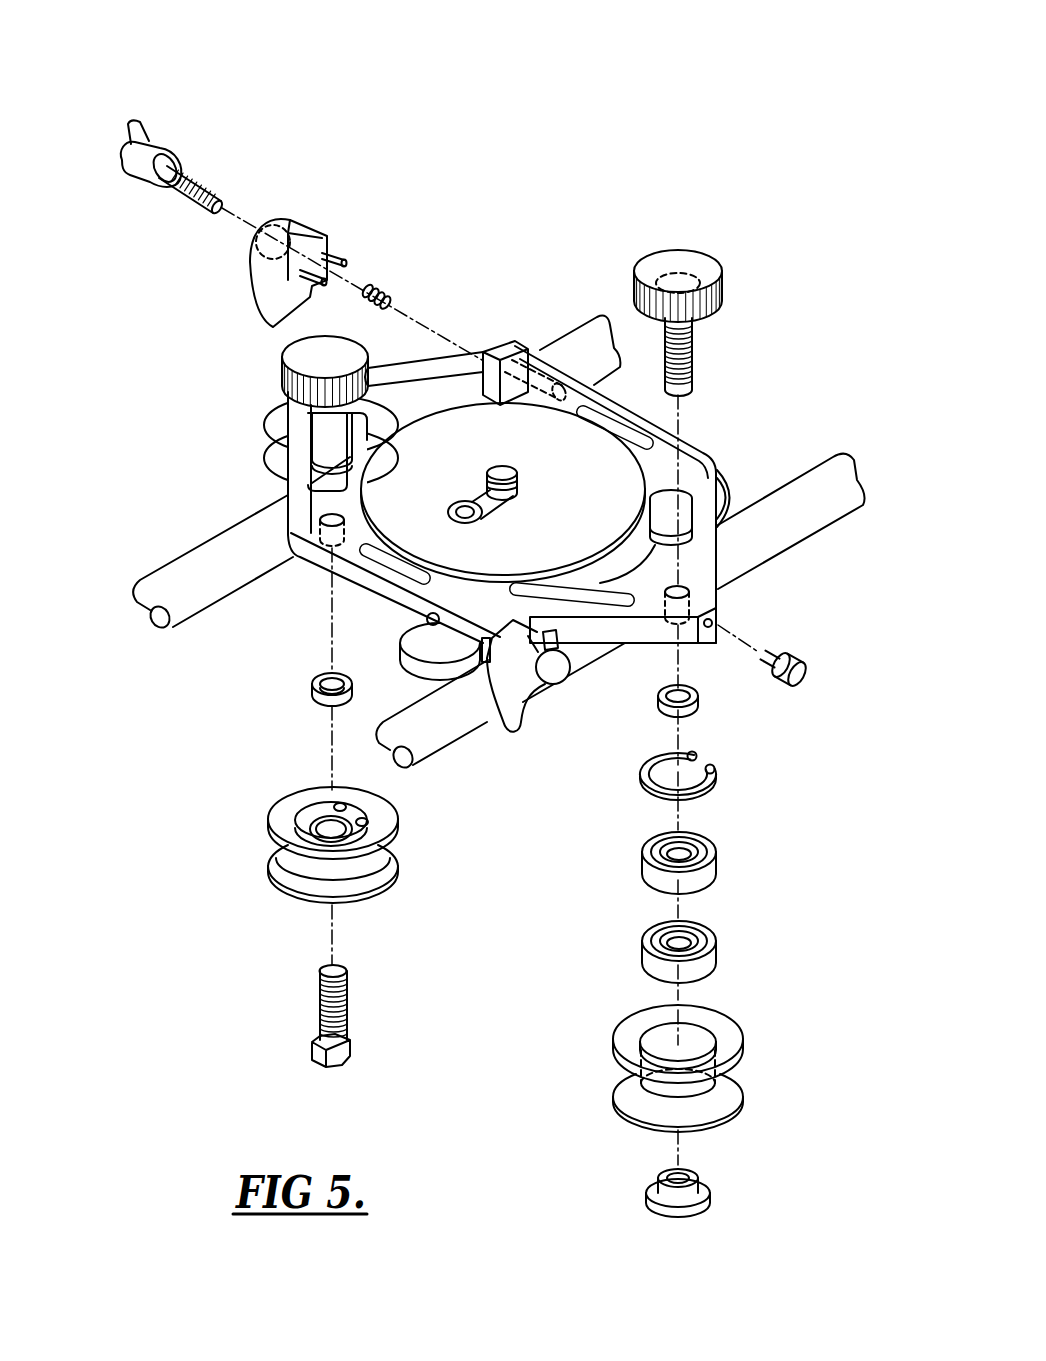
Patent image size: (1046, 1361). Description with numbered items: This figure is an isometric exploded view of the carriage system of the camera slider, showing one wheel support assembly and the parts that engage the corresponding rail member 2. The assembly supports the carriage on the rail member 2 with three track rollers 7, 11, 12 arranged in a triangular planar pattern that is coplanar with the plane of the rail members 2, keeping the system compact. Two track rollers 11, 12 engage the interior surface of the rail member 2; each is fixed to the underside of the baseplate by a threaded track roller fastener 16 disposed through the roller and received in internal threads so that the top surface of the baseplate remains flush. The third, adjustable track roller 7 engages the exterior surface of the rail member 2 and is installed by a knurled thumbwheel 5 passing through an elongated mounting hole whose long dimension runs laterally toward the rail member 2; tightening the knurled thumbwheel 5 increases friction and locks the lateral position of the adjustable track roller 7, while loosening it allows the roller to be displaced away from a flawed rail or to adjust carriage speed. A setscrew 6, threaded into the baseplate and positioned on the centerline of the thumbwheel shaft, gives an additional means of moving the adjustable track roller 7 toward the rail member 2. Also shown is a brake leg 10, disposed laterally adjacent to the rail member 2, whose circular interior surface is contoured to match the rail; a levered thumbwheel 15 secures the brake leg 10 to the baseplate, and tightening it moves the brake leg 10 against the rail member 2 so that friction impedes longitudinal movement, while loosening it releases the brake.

The rail member 2 is at (205, 542).
The knurled thumbwheel 5 is at (686, 252).
The setscrew 6 is at (808, 672).
The adjustable track roller 7 is at (745, 1080).
The brake leg 10 is at (250, 265).
The track roller 11 is at (398, 850).
The track roller 12 is at (393, 662).
The levered thumbwheel 15 is at (150, 133).
The track roller fastener 16 is at (356, 1025).